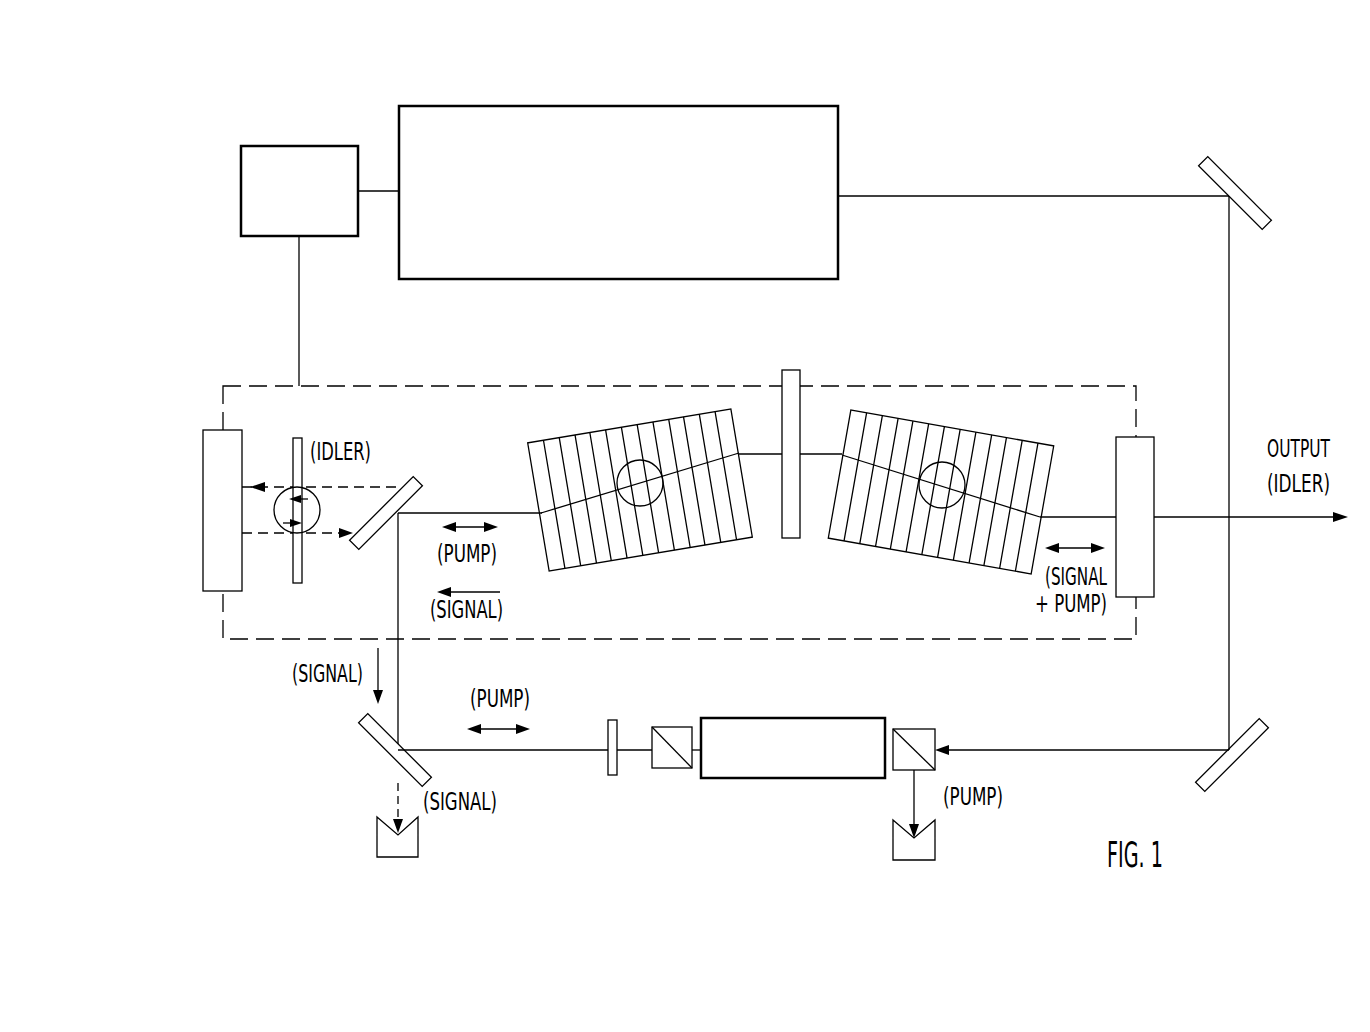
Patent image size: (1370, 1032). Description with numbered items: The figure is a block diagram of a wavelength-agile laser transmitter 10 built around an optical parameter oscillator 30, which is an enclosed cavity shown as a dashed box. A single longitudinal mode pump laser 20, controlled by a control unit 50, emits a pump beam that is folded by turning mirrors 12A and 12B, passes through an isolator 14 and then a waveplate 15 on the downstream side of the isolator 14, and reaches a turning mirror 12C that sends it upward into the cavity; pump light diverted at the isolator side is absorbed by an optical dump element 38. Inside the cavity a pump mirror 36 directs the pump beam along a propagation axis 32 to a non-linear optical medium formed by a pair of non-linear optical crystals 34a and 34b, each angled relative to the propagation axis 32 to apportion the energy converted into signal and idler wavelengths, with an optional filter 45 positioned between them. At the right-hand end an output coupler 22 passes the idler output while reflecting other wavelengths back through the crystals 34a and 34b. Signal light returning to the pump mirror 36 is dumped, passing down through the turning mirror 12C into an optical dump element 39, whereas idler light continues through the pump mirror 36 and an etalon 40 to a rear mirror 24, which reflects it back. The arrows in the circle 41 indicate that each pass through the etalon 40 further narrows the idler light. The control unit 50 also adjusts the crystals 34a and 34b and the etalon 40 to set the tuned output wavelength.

The wavelength agile laser transmitter 10 is at (1022, 59).
The turning mirror 12A is at (1255, 201).
The turning mirror 12B is at (1233, 768).
The turning mirror 12C is at (372, 740).
The isolator 14 is at (797, 718).
The waveplate 15 is at (607, 758).
The single longitudinal mode pump laser 20 is at (612, 106).
The output coupler 22 is at (1154, 462).
The rear mirror 24 is at (203, 560).
The optical parameter oscillator 30 is at (940, 386).
The propagation axis 32 is at (445, 513).
The non-linear optical crystal 34a is at (1015, 437).
The non-linear optical crystal 34b is at (583, 432).
The pump mirror 36 is at (416, 480).
The optical dump element 38 is at (893, 838).
The optical dump element 39 is at (418, 835).
The etalon 40 is at (297, 583).
The circle with arrows 41 is at (320, 512).
The filter 45 is at (790, 370).
The control unit 50 is at (276, 146).